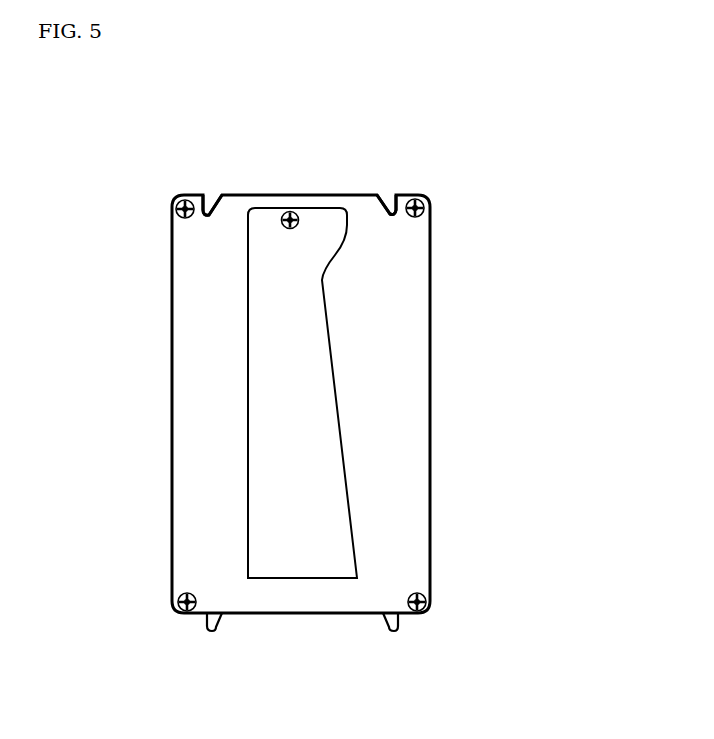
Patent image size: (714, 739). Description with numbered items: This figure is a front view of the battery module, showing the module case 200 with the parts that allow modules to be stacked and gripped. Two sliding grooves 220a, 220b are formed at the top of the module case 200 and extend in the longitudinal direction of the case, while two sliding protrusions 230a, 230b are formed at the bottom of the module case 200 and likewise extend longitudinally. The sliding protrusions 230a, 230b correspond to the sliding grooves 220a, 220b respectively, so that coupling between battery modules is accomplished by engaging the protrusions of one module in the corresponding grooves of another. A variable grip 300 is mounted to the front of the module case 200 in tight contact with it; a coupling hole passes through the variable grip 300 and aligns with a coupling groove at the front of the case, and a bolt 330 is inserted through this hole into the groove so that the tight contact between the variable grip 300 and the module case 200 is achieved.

The module case 200 is at (173, 351).
The sliding groove 220a is at (212, 195).
The sliding groove 220b is at (389, 197).
The sliding protrusion 230a is at (196, 634).
The sliding protrusion 230b is at (410, 628).
The variable grip 300 is at (340, 448).
The bolt 330 is at (296, 206).